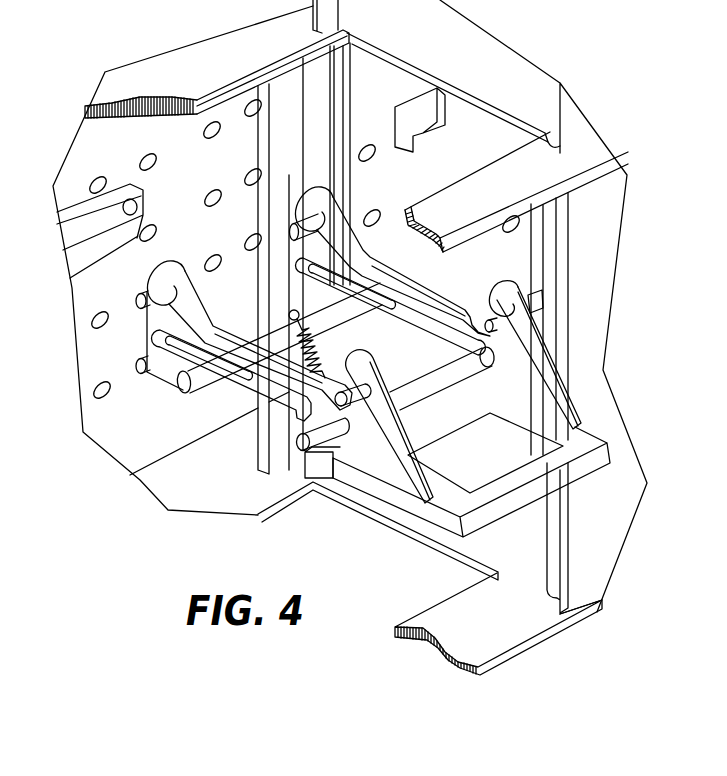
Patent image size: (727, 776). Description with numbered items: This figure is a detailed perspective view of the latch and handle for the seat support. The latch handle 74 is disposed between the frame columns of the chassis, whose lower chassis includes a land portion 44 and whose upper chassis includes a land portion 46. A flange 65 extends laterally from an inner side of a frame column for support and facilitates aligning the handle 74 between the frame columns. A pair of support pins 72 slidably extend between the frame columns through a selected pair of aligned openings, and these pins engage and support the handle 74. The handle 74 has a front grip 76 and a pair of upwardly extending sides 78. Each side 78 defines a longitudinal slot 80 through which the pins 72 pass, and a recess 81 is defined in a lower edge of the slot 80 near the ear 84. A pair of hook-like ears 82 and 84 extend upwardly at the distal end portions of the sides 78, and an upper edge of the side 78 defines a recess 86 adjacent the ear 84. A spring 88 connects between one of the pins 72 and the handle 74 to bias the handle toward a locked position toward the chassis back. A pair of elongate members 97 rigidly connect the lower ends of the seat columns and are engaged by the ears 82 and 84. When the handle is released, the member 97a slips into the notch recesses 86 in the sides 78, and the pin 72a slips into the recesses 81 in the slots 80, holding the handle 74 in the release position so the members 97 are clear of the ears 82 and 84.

The land portion 44 is at (480, 640).
The land portion 46 is at (190, 81).
The flange 65 is at (437, 126).
The support pins 72 is at (207, 394).
The pin 72a is at (428, 405).
The latch handle 74 is at (354, 482).
The front grip 76 is at (582, 470).
The sides 78 is at (375, 245).
The longitudinal slot 80 is at (233, 398).
The recess 81 is at (304, 480).
The hook-like ear 82 is at (163, 276).
The hook-like ear 84 is at (495, 292).
The recess 86 is at (484, 320).
The spring 88 is at (288, 350).
The elongate members 97 is at (330, 230).
The member 97a is at (544, 305).